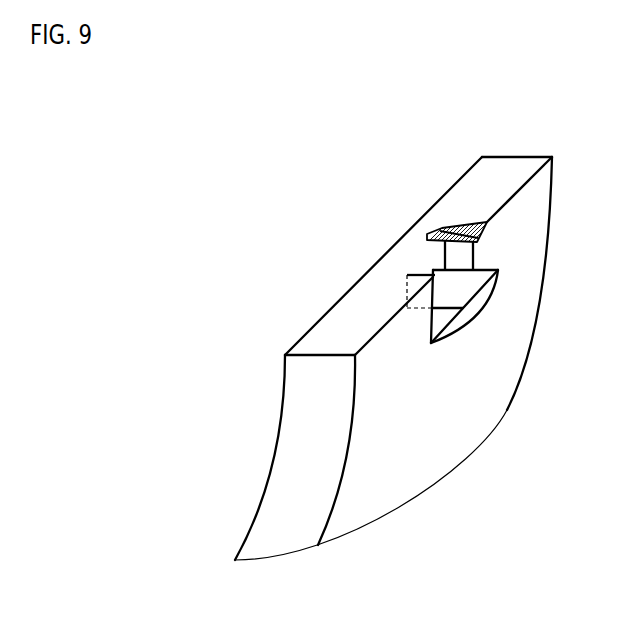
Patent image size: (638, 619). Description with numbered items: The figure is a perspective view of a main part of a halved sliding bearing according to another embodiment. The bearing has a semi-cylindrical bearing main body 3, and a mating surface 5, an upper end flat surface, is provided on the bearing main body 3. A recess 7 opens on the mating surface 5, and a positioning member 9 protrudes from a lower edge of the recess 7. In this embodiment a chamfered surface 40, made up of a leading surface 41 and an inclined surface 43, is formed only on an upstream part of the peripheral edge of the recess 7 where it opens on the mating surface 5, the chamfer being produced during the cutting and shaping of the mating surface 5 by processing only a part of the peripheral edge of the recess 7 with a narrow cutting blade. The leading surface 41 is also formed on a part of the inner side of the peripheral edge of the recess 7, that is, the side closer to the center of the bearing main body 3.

The bearing main body 3 is at (443, 450).
The mating surface 5 is at (365, 320).
The recess 7 is at (433, 268).
The positioning member 9 is at (473, 308).
The chamfered surface 40 is at (351, 91).
The leading surface 41 is at (434, 234).
The inclined surface 43 is at (470, 224).